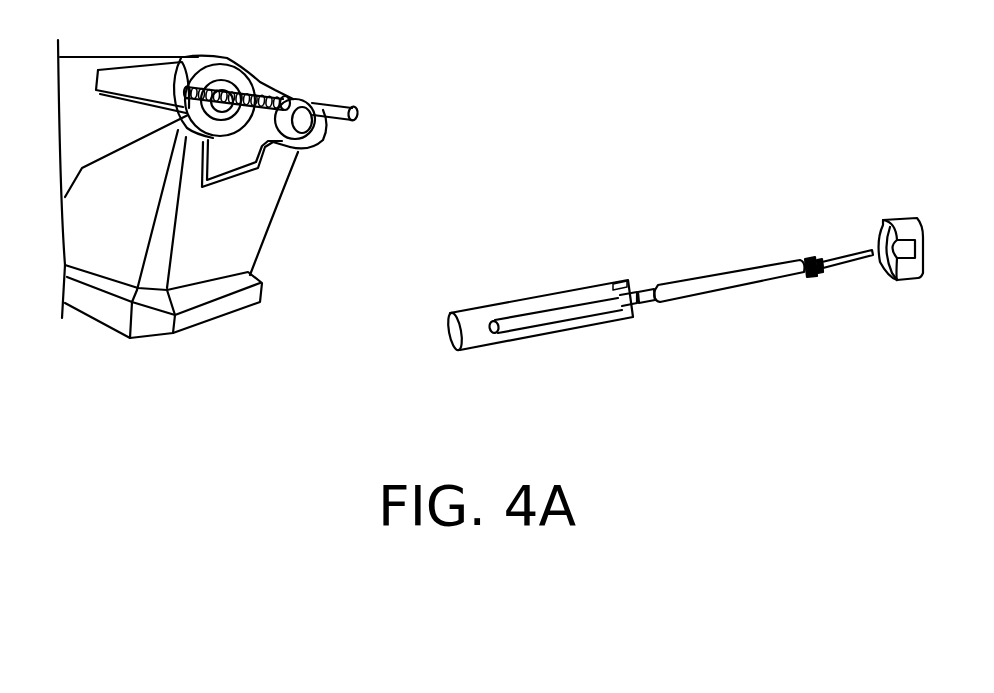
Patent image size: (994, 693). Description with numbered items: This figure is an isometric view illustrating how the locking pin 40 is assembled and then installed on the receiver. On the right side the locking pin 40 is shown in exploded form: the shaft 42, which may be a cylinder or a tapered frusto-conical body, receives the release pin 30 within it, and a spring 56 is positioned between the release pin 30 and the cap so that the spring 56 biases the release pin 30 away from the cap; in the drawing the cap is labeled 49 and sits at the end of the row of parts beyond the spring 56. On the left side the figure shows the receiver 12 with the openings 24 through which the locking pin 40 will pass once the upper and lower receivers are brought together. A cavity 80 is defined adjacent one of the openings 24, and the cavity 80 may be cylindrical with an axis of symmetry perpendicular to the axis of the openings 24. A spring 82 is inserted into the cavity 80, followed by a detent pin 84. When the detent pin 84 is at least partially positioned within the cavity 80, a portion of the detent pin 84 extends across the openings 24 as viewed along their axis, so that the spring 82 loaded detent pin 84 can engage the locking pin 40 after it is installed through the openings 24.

The upper receiver 12 is at (80, 133).
The cavity 80 is at (181, 58).
The openings 24 is at (216, 80).
The spring 82 is at (272, 95).
The detent pin 84 is at (340, 103).
The locking pin 40 is at (648, 250).
The shaft 42 is at (548, 315).
The release pin 30 is at (715, 285).
The spring 56 is at (843, 255).
The end cap 49 is at (900, 220).